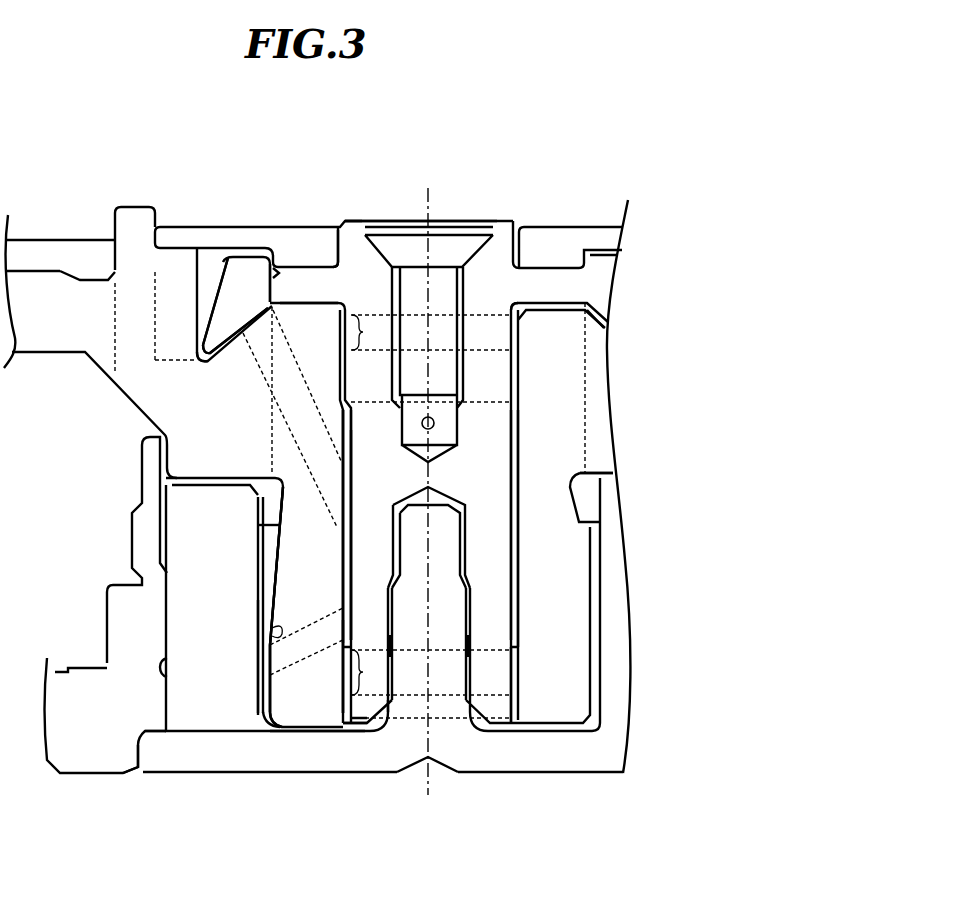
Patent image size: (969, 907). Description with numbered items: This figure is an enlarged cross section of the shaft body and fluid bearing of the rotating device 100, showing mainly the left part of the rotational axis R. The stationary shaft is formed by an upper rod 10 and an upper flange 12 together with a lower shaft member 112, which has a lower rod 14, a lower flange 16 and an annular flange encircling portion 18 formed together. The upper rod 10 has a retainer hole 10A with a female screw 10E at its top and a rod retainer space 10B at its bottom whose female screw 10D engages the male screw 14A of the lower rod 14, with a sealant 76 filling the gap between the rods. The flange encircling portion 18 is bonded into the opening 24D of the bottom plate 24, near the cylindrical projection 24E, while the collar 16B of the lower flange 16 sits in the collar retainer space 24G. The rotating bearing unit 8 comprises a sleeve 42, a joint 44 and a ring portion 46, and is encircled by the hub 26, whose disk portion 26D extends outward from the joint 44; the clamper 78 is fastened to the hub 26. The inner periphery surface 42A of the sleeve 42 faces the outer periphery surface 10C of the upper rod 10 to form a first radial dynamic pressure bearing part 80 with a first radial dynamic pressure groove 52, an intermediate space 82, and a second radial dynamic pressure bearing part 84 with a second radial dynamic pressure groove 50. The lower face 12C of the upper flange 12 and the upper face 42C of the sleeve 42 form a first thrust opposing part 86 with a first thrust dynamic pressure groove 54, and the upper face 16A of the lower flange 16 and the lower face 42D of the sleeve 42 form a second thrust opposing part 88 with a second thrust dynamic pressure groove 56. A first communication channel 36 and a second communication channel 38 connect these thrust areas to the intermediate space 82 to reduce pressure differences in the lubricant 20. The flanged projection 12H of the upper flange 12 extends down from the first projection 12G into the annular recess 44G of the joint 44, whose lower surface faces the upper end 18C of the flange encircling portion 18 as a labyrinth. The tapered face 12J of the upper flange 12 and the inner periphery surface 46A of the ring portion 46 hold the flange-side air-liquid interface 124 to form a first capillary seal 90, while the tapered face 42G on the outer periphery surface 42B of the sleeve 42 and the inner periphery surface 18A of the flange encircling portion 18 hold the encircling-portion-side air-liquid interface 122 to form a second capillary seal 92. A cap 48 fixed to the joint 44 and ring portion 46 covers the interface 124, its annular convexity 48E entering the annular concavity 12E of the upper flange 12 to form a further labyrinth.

The hub 26 is at (54, 282).
The disk portion 26D is at (28, 297).
The clamper 78 is at (86, 258).
The ring portion 46 is at (180, 267).
The cap 48 is at (205, 237).
The annular convexity 48E is at (320, 278).
The tapered face 12J is at (251, 267).
The flanged projection 12H is at (268, 275).
The first projection 12G is at (302, 285).
The annular concavity 12E is at (358, 283).
The first thrust opposing part 86 is at (287, 297).
The retainer hole 10A is at (386, 250).
The female screw 10E is at (450, 293).
The rotational axis R is at (430, 479).
The upper rod 10 is at (495, 262).
The lower shaft member 112 is at (522, 287).
The upper flange 12 is at (557, 287).
The flange-side air-liquid interface 124 is at (200, 293).
The inner periphery surface 46A is at (200, 313).
The first capillary seal 90 is at (200, 313).
The lubricant 20 is at (200, 353).
The lower face 12C is at (303, 297).
The first thrust dynamic pressure groove 54 is at (303, 305).
The upper face 42C is at (320, 303).
The first radial dynamic pressure bearing part 80 is at (370, 345).
The outer periphery surface 10C is at (519, 377).
The annular recess 44G is at (205, 360).
The first radial dynamic pressure groove 52 is at (340, 387).
The joint 44 is at (160, 404).
The first communication channel 36 is at (300, 423).
The cylindrical projection 24E is at (152, 450).
The intermediate space 82 is at (352, 468).
The upper end 18C is at (200, 487).
The sealant 76 is at (443, 507).
The encircling-portion-side air-liquid interface 122 is at (257, 525).
The second capillary seal 92 is at (260, 542).
The tapered face 42G is at (281, 537).
The inner periphery surface 18A is at (257, 562).
The inner periphery surface 42A is at (341, 565).
The sleeve 42 is at (273, 585).
The second communication channel 38 is at (312, 630).
The male screw 14A is at (470, 608).
The female screw 10D is at (507, 606).
The bearing unit 8 is at (275, 610).
The outer periphery surface 42B is at (272, 632).
The rod retainer space 10B is at (498, 677).
The second radial dynamic pressure groove 50 is at (341, 675).
The second radial dynamic pressure bearing part 84 is at (369, 672).
The lower face 42D is at (315, 725).
The opening 24D is at (165, 698).
The second thrust dynamic pressure groove 56 is at (266, 720).
The bottom plate 24 is at (63, 760).
The collar retainer space 24G is at (138, 750).
The collar 16B is at (163, 752).
The flange encircling portion 18 is at (215, 685).
The second thrust opposing part 88 is at (295, 735).
The upper face 16A is at (328, 737).
The lower rod 14 is at (448, 668).
The lower flange 16 is at (515, 757).
The rotating device 100 is at (265, 851).